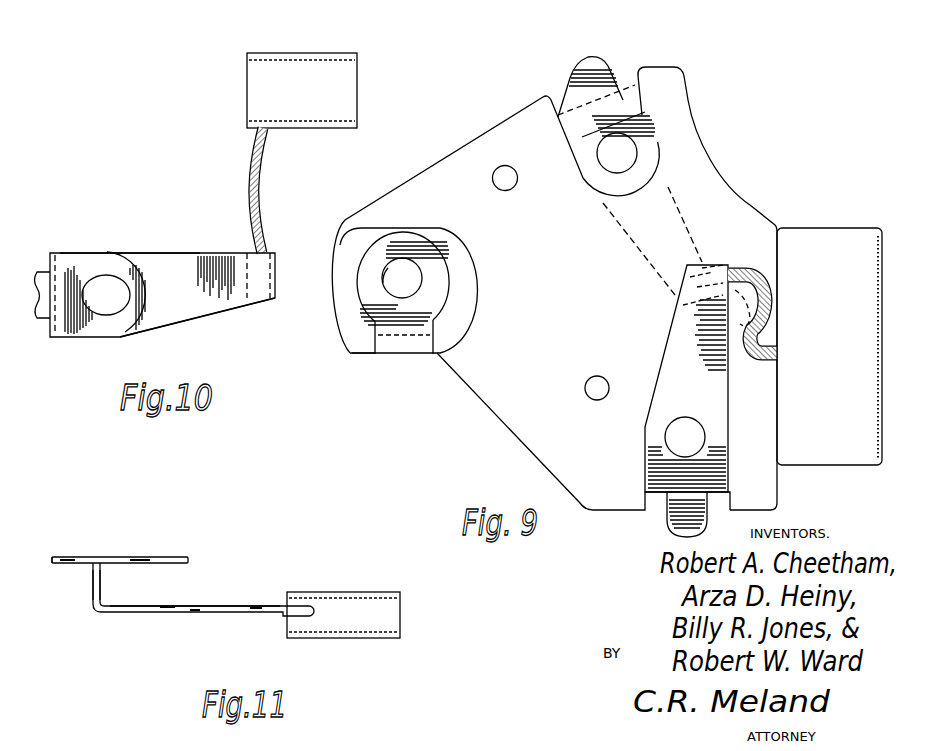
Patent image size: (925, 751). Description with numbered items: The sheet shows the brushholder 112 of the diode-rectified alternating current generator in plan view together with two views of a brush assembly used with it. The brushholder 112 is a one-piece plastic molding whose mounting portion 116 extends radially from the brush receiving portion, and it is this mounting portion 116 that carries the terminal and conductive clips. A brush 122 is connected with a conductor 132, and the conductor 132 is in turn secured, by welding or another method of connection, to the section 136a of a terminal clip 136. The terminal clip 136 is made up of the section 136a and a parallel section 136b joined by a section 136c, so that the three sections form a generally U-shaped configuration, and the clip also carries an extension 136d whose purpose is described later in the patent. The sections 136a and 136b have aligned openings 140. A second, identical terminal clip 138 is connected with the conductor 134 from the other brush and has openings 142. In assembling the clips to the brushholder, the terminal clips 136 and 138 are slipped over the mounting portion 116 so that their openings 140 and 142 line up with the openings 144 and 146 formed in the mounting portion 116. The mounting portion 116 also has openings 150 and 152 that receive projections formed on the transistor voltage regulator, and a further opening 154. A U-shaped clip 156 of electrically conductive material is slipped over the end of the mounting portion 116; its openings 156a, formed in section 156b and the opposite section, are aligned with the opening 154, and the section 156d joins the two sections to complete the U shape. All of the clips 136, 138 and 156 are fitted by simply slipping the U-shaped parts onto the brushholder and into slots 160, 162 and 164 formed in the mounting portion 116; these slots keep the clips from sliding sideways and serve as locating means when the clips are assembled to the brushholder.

In FIG. 9, the brushholder 112 is at (750, 196).
In FIG. 9, the mounting portion 116 is at (553, 460).
In FIG. 10, the brush 122 is at (267, 87).
In FIG. 11, the brush 122 is at (338, 605).
In FIG. 9, the conductor 132 is at (776, 300).
In FIG. 10, the conductor 132 is at (264, 173).
In FIG. 9, the conductor 134 is at (755, 270).
In FIG. 9, the terminal clip 136 is at (630, 100).
In FIG. 10, the terminal clip 136 is at (172, 260).
In FIG. 11, the terminal clip 136 is at (178, 605).
In FIG. 10, the section 136a is at (193, 300).
In FIG. 11, the section 136a is at (213, 613).
In FIG. 10, the section 136b is at (97, 257).
In FIG. 11, the section 136b is at (163, 543).
In FIG. 11, the section 136c is at (96, 583).
In FIG. 9, the extension 136d is at (592, 72).
In FIG. 10, the extension 136d is at (43, 270).
In FIG. 11, the extension 136d is at (58, 556).
In FIG. 9, the terminal clip 138 is at (682, 350).
In FIG. 9, the openings 140 is at (633, 157).
In FIG. 10, the openings 140 is at (107, 316).
In FIG. 9, the openings 142 is at (647, 462).
In FIG. 9, the opening 144 is at (625, 172).
In FIG. 9, the opening 146 is at (702, 433).
In FIG. 9, the opening 150 is at (503, 166).
In FIG. 9, the opening 152 is at (593, 379).
In FIG. 9, the opening 154 is at (398, 259).
In FIG. 9, the U-shaped clip 156 is at (432, 307).
In FIG. 9, the openings 156a is at (385, 282).
In FIG. 9, the section 156b is at (445, 280).
In FIG. 9, the section 156d is at (408, 340).
In FIG. 9, the slot 160 is at (641, 70).
In FIG. 9, the slot 162 is at (648, 498).
In FIG. 9, the slot 164 is at (383, 358).